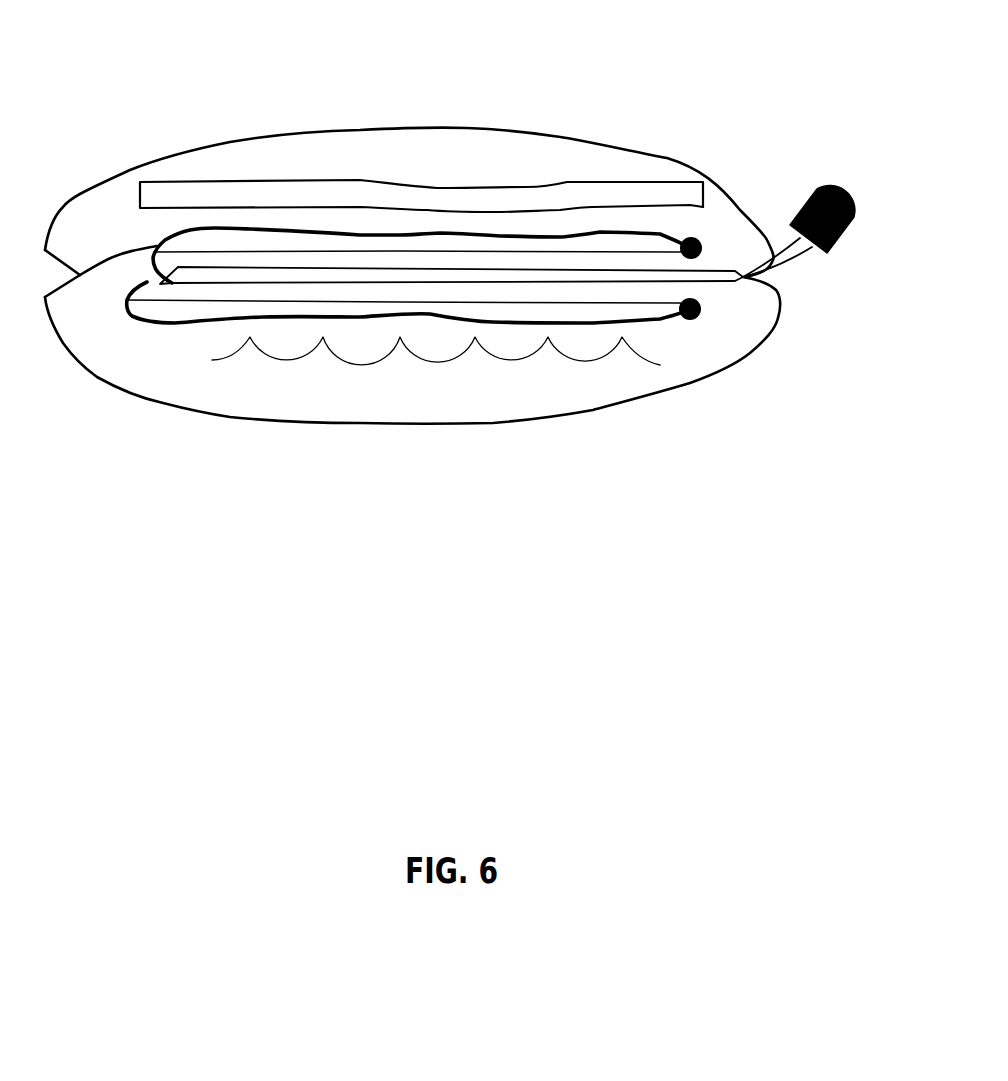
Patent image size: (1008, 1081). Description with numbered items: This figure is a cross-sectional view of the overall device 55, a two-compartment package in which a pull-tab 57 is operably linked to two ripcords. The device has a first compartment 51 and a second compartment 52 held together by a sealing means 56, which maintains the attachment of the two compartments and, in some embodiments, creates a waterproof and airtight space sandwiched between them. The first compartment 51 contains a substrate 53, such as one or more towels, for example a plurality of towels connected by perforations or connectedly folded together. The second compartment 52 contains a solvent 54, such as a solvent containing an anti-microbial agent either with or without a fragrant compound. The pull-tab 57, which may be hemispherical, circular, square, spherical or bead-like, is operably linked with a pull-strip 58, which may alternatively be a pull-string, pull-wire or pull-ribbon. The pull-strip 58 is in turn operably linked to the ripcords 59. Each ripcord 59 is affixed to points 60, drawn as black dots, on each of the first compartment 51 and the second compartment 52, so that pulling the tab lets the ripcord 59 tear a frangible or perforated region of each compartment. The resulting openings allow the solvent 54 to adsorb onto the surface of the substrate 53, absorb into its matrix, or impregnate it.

The first compartment 51 is at (580, 155).
The second compartment 52 is at (318, 400).
The substrate 53 is at (607, 180).
The solvent 54 is at (523, 370).
The overall device 55 is at (350, 612).
The sealing means 56 is at (78, 282).
The pull-tab 57 is at (815, 185).
The pull-strip 58 is at (315, 278).
The ripcord 59 is at (308, 236).
The points 60 is at (693, 327).